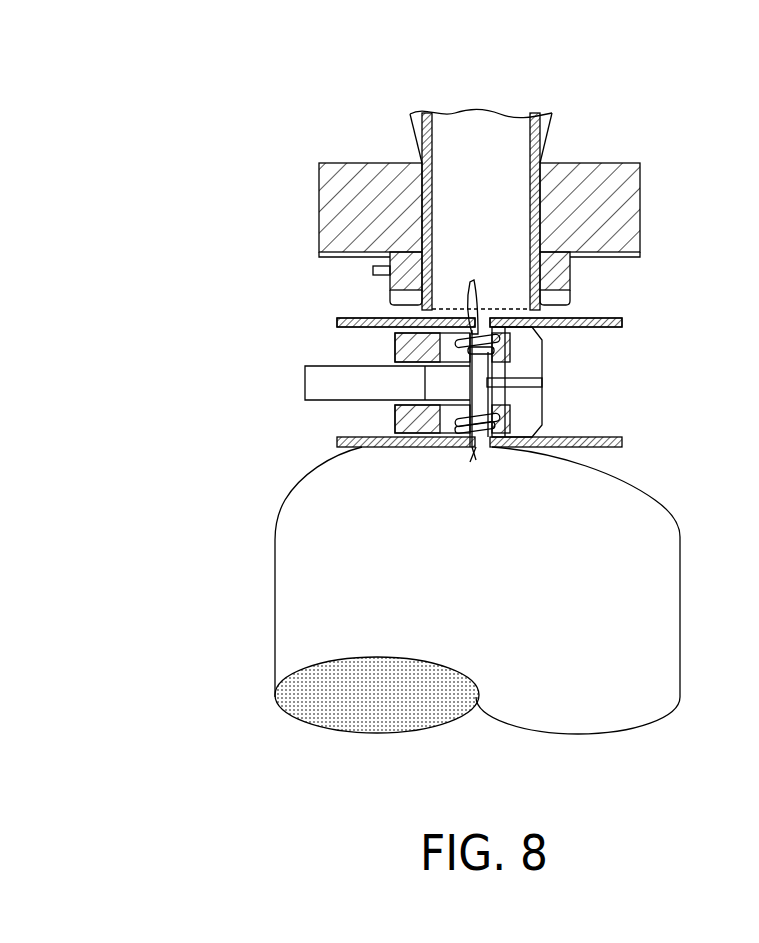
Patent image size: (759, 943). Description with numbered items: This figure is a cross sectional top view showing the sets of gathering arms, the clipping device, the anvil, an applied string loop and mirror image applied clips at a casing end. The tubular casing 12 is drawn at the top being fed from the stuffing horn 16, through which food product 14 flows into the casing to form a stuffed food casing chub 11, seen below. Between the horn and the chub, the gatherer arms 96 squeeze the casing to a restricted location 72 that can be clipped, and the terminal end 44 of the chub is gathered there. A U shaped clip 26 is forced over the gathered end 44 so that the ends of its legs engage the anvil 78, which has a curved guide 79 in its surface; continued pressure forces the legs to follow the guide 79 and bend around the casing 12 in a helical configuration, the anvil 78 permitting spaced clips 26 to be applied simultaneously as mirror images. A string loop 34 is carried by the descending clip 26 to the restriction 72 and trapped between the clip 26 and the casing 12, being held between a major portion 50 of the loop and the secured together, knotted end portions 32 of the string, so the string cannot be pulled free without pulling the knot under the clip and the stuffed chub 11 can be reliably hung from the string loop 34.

The stuffed food casing chub 11 is at (493, 556).
The tubular casing 12 is at (547, 142).
The food product 14 is at (390, 713).
The stuffing horn 16 is at (487, 163).
The clip 26 is at (507, 343).
The secured together end portions 32 is at (470, 356).
The string loop 34 is at (476, 282).
The terminal end 44 is at (497, 318).
The major portion 50 is at (455, 321).
The restricted location 72 is at (477, 452).
The anvil 78 is at (493, 352).
The curved guide 79 is at (470, 348).
The gatherer arms 96 is at (340, 320).